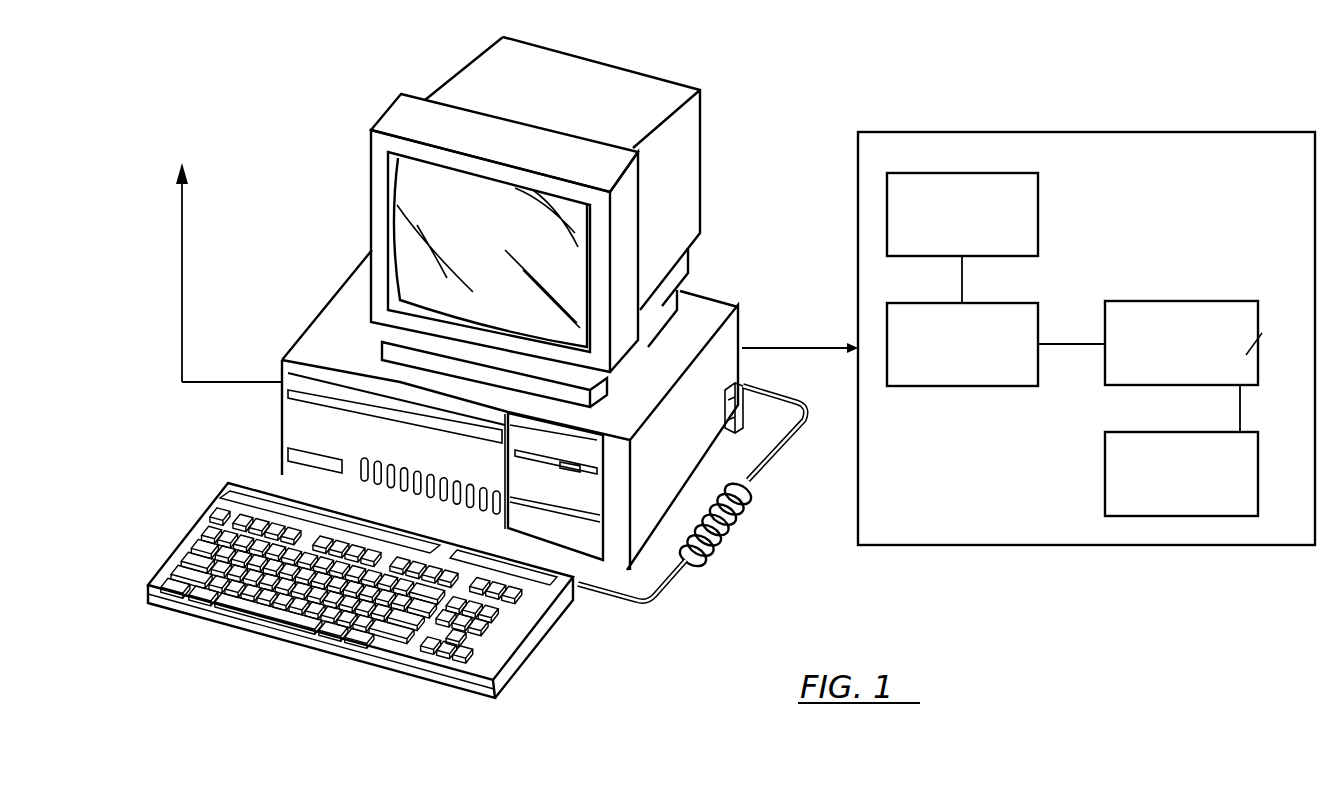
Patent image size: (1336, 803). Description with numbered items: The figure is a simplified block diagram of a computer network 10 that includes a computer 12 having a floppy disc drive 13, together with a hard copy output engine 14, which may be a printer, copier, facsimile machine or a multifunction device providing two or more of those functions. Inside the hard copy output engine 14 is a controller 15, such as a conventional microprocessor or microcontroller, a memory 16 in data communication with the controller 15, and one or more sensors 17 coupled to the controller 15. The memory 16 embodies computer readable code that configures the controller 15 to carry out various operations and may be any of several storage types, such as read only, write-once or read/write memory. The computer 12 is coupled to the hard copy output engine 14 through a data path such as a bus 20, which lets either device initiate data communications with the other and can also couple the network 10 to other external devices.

The computer network 10 is at (608, 716).
The computer 12 is at (320, 313).
The floppy disc drive 13 is at (558, 470).
The hard copy output engine 14 is at (929, 545).
The controller 15 is at (947, 389).
The memory 16 is at (1040, 210).
The sensors 17 is at (1221, 297).
The bus 20 is at (242, 385).